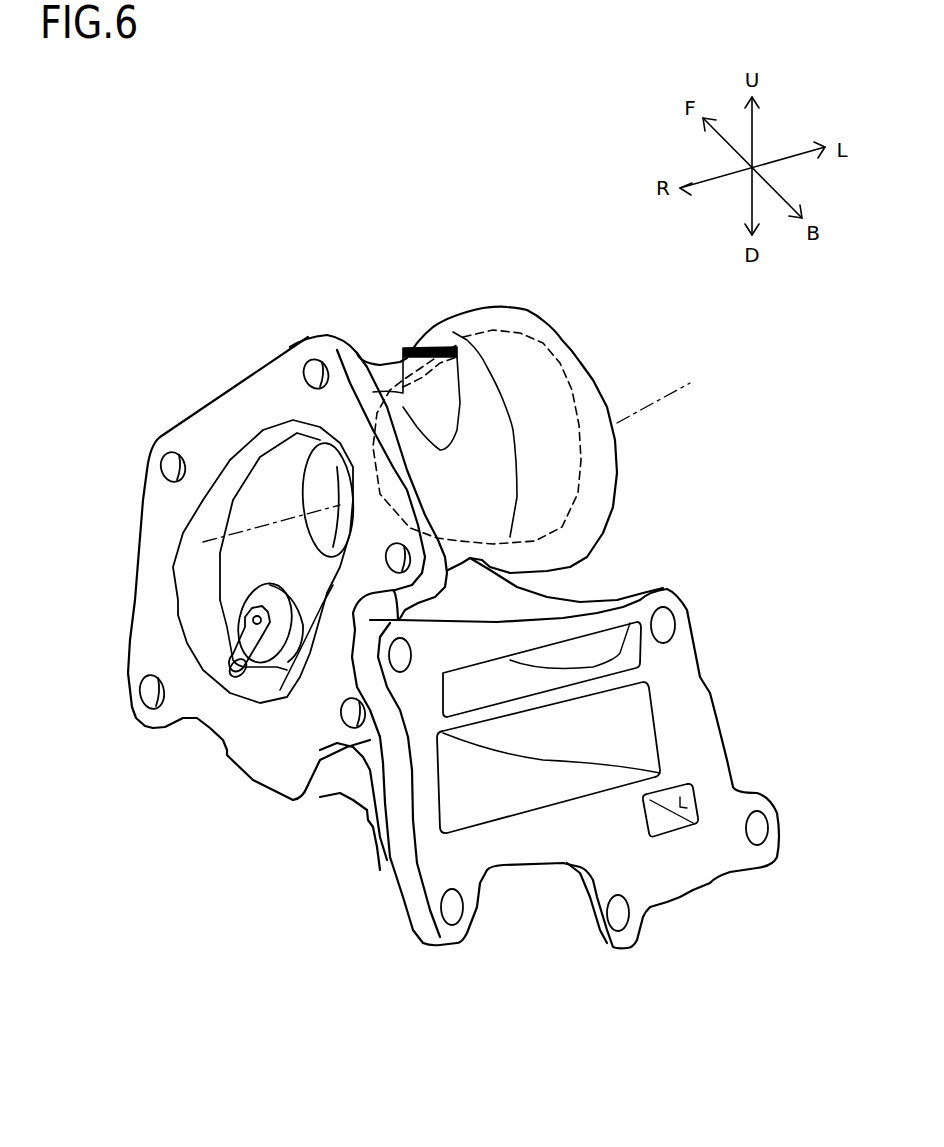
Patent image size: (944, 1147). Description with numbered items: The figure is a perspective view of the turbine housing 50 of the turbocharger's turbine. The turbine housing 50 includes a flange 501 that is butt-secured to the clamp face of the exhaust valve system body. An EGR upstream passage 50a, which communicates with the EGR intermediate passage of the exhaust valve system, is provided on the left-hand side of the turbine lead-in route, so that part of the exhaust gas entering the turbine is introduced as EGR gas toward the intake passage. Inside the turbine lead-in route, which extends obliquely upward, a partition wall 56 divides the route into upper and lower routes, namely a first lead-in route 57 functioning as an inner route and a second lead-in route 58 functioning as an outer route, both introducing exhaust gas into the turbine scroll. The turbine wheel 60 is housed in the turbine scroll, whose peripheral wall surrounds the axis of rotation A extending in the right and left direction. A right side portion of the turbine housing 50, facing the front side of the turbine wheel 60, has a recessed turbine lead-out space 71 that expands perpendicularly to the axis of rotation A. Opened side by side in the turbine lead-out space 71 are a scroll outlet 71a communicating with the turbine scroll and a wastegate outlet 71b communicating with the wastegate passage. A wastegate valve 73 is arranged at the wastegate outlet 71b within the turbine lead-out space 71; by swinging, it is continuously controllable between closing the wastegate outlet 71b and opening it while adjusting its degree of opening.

The turbine housing 50 is at (565, 575).
The flange 501 is at (739, 686).
The EGR upstream passage 50a is at (722, 788).
The partition wall 56 is at (487, 782).
The first lead-in route 57 is at (544, 628).
The second lead-in route 58 is at (555, 866).
The turbine wheel 60 is at (487, 405).
The turbine lead-out space 71 is at (262, 602).
The scroll outlet 71a is at (265, 515).
The wastegate outlet 71b is at (276, 708).
The wastegate valve 73 is at (194, 629).
The axis of rotation A is at (659, 375).